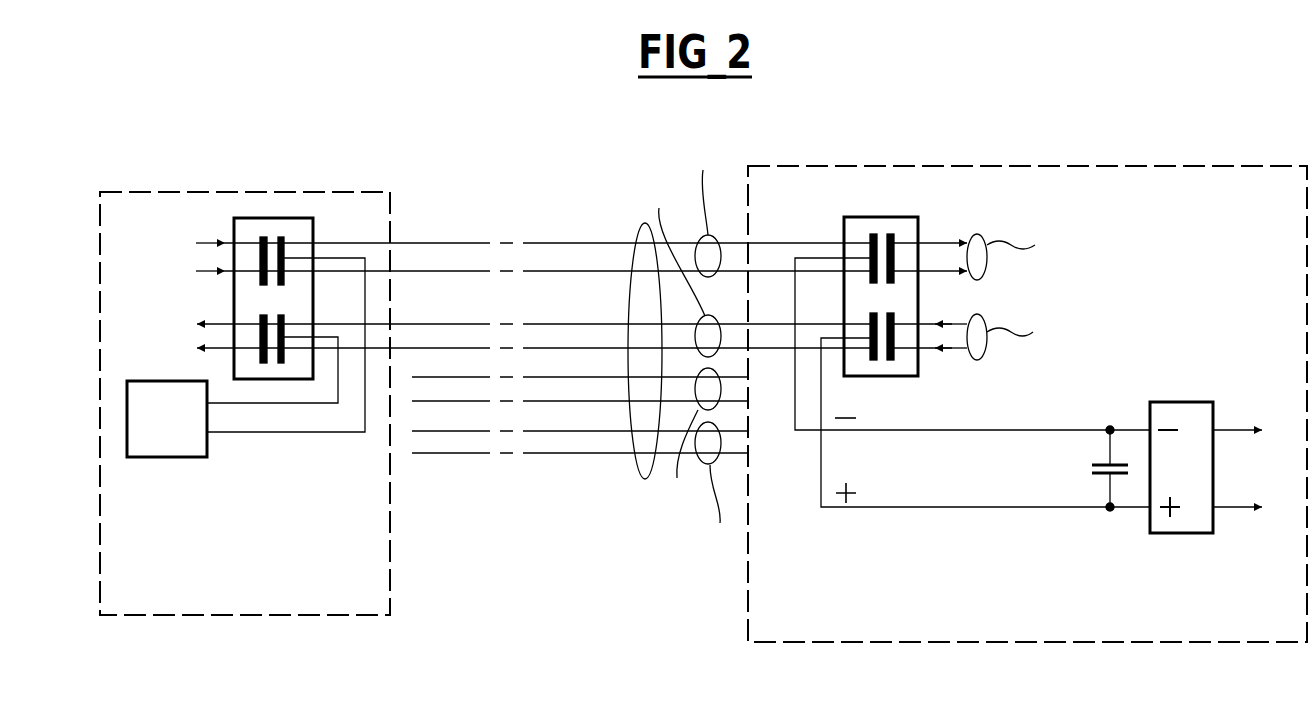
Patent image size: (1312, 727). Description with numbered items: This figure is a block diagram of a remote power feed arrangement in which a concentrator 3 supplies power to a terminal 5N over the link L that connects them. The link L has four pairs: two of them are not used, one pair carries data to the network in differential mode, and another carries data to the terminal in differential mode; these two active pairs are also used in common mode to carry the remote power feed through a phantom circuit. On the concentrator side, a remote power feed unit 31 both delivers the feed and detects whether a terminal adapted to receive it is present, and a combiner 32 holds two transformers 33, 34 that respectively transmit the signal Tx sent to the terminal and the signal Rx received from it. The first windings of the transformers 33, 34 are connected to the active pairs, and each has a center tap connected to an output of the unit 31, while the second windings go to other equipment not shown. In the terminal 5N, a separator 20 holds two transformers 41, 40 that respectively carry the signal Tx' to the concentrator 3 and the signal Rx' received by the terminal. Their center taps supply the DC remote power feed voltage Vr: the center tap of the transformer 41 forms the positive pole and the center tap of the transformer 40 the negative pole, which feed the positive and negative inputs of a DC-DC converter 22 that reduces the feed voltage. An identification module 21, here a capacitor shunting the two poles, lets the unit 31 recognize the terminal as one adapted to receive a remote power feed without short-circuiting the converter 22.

The concentrator 3 is at (250, 191).
The remote power feed unit 31 is at (138, 380).
The combiner 32 is at (245, 301).
The transformer 33 is at (257, 241).
The transformer 34 is at (263, 364).
The terminal 5N is at (978, 166).
The separator 20 is at (913, 238).
The transformer 40 is at (868, 236).
The transformer 41 is at (897, 318).
The identification module 21 is at (1106, 452).
The DC-DC converter 22 is at (1183, 402).
The link L is at (647, 478).